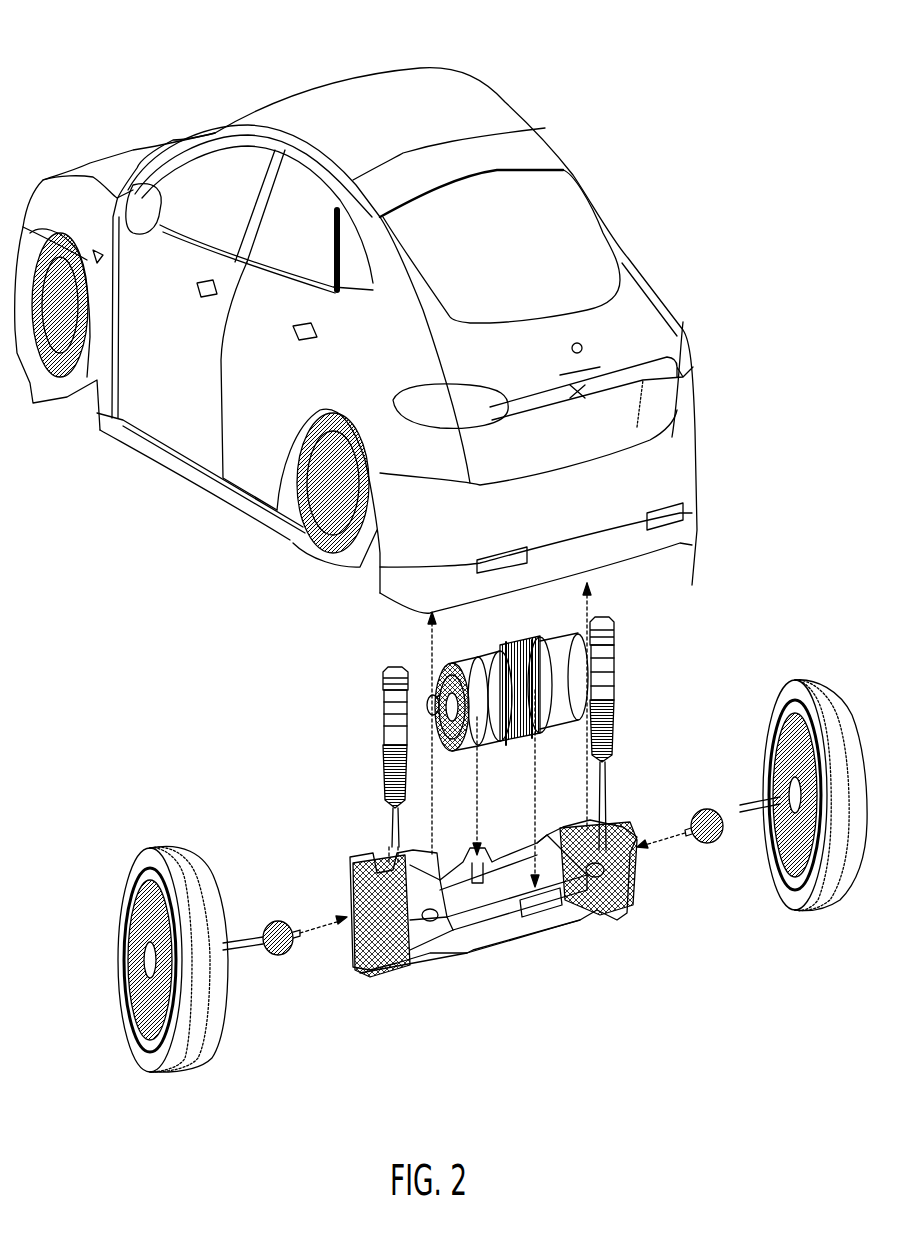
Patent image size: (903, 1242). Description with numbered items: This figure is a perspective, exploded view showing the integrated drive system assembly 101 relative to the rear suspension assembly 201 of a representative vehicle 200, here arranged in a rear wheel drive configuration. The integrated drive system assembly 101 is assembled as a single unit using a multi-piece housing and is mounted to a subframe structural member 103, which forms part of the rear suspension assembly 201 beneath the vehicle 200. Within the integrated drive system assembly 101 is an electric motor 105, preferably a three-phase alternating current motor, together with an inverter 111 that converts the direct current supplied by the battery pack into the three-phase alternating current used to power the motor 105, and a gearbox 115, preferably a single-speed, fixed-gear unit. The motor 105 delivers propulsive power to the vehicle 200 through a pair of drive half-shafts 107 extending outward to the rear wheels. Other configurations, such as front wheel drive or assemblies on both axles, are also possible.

The vehicle 200 is at (107, 123).
The rear suspension assembly 201 is at (403, 977).
The integrated drive system assembly 101 is at (513, 648).
The subframe structural member 103 is at (520, 927).
The electric motor 105 is at (478, 720).
The drive half-shafts 107 is at (242, 937).
The inverter 111 is at (533, 633).
The gearbox 115 is at (482, 638).